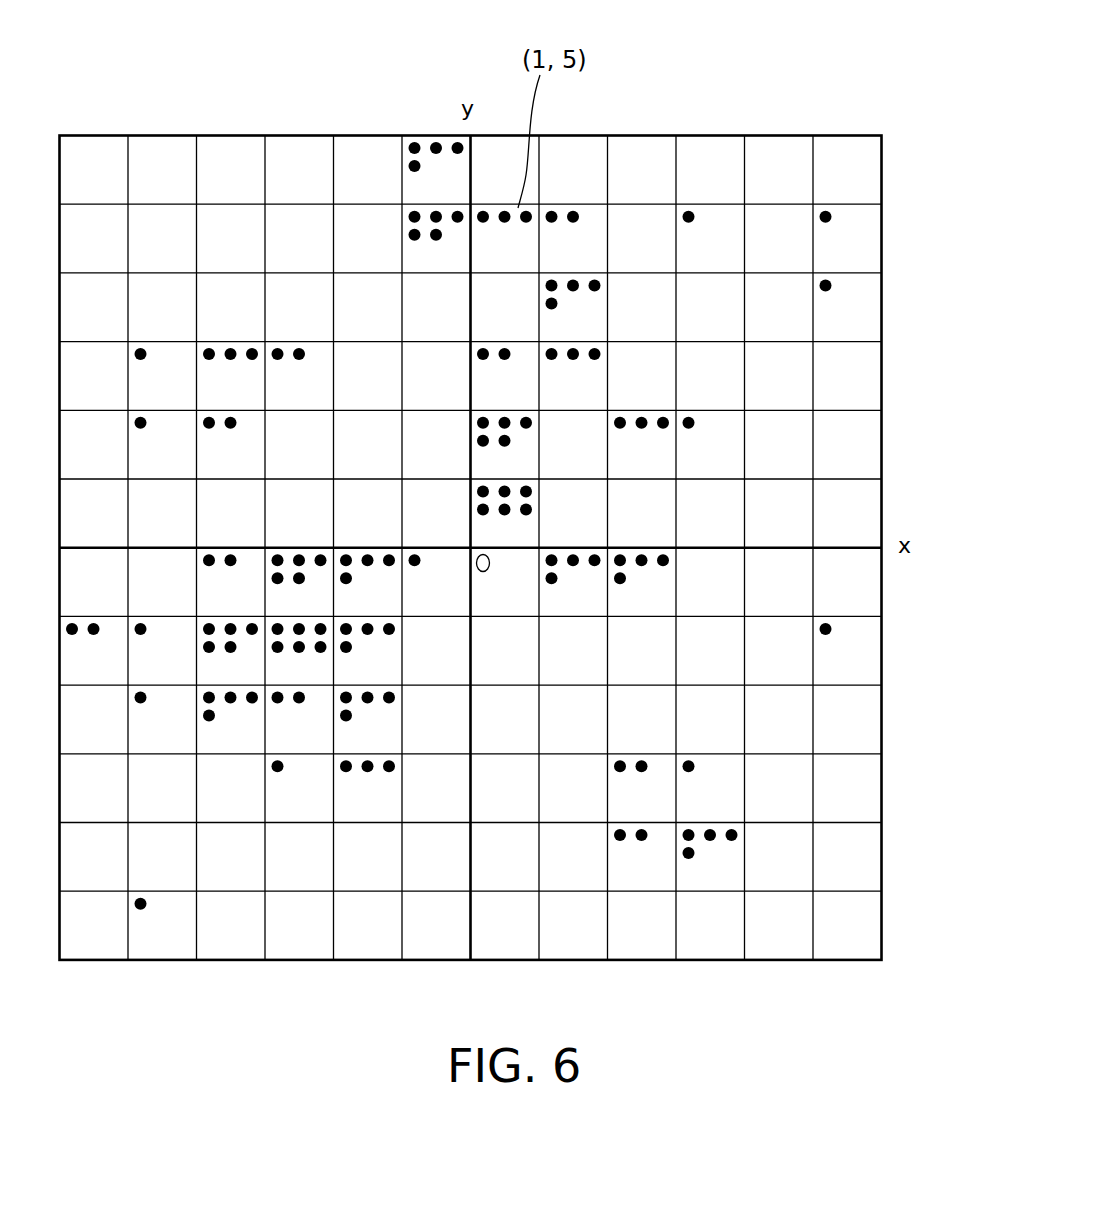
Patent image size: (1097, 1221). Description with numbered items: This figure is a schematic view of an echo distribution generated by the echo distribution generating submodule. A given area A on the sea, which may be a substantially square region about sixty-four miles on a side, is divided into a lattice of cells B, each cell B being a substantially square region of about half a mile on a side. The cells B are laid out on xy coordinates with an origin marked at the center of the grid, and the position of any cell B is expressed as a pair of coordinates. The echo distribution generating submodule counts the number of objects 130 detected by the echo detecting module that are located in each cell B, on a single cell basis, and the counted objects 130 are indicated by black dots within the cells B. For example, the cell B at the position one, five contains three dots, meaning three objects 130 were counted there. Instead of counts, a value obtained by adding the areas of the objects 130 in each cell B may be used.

The object 130 is at (831, 628).
The area A is at (821, 102).
The cell B is at (872, 178).